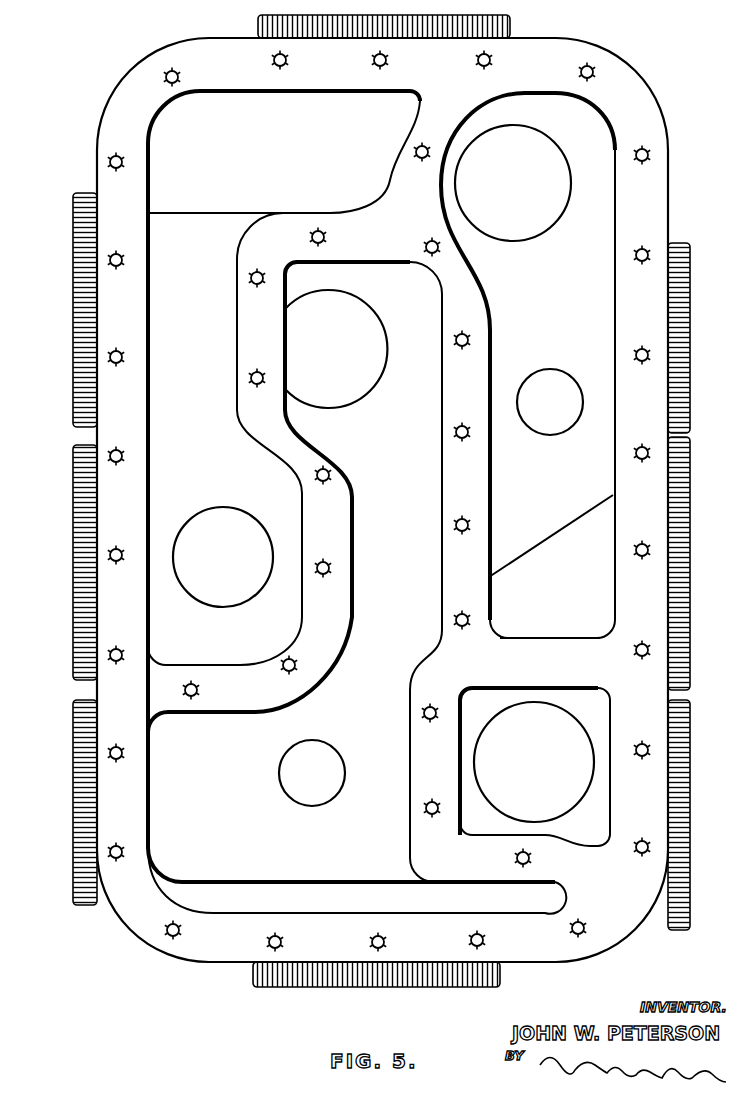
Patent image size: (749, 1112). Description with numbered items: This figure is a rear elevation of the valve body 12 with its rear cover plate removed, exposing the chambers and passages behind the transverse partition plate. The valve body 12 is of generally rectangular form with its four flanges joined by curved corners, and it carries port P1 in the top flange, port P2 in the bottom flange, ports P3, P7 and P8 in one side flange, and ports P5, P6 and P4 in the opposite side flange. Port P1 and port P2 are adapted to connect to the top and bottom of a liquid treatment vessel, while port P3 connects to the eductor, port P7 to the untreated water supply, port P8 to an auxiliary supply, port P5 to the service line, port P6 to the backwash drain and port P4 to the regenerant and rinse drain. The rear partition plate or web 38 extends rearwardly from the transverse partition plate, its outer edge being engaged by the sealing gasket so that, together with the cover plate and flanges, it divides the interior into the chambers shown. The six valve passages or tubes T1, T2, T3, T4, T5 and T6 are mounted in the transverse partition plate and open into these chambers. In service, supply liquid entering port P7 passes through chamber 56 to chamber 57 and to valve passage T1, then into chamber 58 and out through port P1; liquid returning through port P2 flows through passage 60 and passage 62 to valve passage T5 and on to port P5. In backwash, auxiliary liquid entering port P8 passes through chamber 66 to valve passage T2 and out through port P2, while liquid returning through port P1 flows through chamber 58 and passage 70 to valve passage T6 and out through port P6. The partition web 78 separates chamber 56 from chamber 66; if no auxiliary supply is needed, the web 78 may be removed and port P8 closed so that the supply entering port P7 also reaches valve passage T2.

The valve body 12 is at (104, 70).
The rear partition plate or web 38 is at (386, 195).
The chamber 56 is at (580, 592).
The chamber 57 is at (580, 297).
The chamber 58 is at (320, 160).
The passage 60 is at (349, 907).
The passage 62 is at (403, 575).
The chamber 66 is at (607, 817).
The passage 70 is at (207, 357).
The partition web 78 is at (549, 648).
The valve passage T1 is at (533, 237).
The valve passage T2 is at (558, 814).
The valve passage T3 is at (567, 428).
The valve passage T4 is at (328, 800).
The valve passage T5 is at (358, 393).
The valve passage T6 is at (250, 598).
The port P1 is at (500, 20).
The port P2 is at (378, 986).
The port P3 is at (692, 337).
The port P4 is at (76, 785).
The port P5 is at (78, 315).
The port P6 is at (76, 555).
The port P7 is at (692, 543).
The port P8 is at (692, 790).